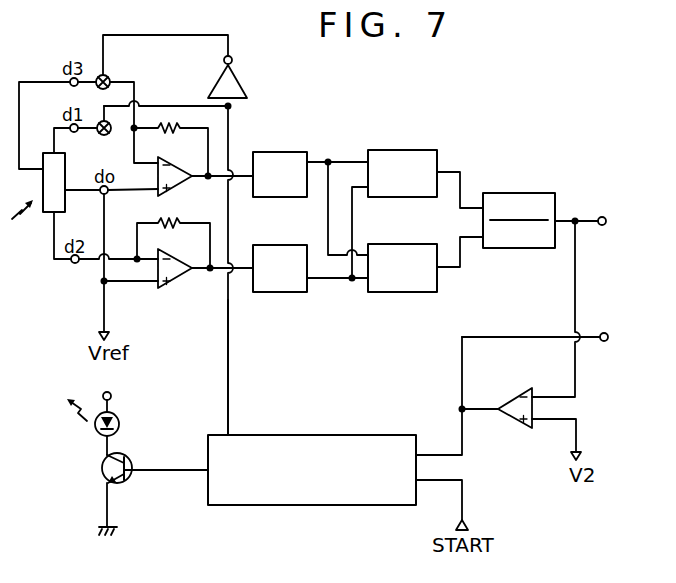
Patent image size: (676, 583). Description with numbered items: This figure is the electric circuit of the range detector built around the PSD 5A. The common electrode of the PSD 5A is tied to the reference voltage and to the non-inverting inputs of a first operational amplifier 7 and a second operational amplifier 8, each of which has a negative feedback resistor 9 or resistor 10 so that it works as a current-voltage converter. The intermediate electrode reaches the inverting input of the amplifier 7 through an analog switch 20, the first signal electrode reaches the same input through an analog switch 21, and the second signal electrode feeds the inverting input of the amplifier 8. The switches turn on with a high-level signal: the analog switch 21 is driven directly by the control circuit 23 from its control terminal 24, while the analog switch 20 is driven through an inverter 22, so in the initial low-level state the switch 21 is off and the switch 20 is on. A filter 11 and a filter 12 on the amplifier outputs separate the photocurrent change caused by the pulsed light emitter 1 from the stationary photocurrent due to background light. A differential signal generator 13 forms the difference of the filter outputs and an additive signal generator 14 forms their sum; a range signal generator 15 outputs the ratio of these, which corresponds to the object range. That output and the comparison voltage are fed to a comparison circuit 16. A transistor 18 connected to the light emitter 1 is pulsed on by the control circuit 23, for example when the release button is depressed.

The light emitter 1 is at (119, 424).
The PSD 5A is at (62, 210).
The first operational amplifier 7 is at (180, 184).
The second operational amplifier 8 is at (180, 276).
The resistor 9 is at (171, 133).
The resistor 10 is at (172, 228).
The filter 11 is at (281, 157).
The filter 12 is at (277, 250).
The differential signal generator 13 is at (410, 153).
The additive signal generator 14 is at (402, 247).
The range signal generator 15 is at (520, 195).
The comparison circuit 16 is at (512, 398).
The transistor 18 is at (128, 481).
The analog switch 20 is at (110, 76).
The analog switch 21 is at (104, 135).
The inverter 22 is at (238, 82).
The control circuit 23 is at (388, 440).
The control terminal 24 is at (231, 432).